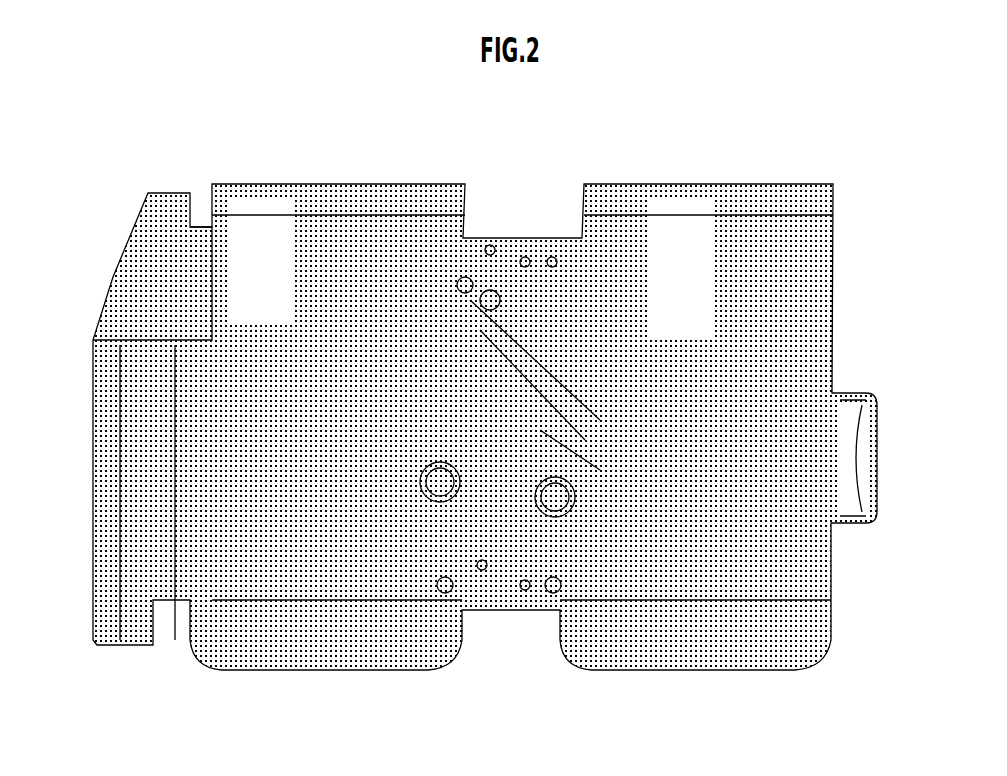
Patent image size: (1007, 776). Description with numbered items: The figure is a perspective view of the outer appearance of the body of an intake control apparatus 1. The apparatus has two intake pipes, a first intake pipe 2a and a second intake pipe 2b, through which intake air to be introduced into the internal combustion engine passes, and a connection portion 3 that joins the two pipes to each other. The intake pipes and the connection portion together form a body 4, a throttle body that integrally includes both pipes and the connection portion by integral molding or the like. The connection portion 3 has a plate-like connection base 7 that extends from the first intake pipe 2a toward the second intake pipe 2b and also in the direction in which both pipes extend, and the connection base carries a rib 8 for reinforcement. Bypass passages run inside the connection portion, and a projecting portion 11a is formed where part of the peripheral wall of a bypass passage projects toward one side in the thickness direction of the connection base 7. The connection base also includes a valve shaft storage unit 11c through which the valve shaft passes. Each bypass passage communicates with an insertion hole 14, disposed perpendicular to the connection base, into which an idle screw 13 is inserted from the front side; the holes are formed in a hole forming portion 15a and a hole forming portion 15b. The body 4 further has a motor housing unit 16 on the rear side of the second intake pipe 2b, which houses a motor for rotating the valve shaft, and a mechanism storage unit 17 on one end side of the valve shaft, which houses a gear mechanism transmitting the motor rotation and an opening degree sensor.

The intake control apparatus 1 is at (803, 126).
The first intake pipe 2a is at (707, 184).
The second intake pipe 2b is at (333, 184).
The connection portion 3 is at (526, 190).
The body 4 is at (851, 238).
The connection base 7 is at (500, 258).
The rib 8 is at (552, 262).
The projecting portion 11a is at (540, 428).
The valve shaft storage unit 11c is at (463, 262).
The idle screw 13 is at (445, 595).
The insertion hole 14 is at (440, 480).
The hole forming portion 15a is at (440, 500).
The hole forming portion 15b is at (565, 515).
The motor housing unit 16 is at (205, 232).
The mechanism storage unit 17 is at (150, 428).